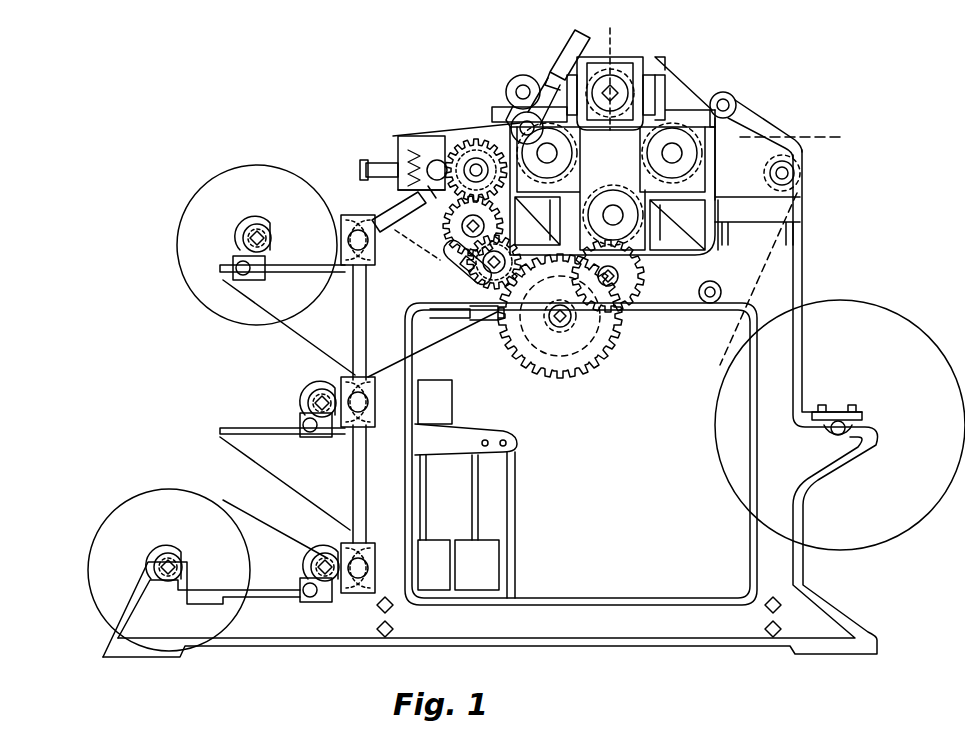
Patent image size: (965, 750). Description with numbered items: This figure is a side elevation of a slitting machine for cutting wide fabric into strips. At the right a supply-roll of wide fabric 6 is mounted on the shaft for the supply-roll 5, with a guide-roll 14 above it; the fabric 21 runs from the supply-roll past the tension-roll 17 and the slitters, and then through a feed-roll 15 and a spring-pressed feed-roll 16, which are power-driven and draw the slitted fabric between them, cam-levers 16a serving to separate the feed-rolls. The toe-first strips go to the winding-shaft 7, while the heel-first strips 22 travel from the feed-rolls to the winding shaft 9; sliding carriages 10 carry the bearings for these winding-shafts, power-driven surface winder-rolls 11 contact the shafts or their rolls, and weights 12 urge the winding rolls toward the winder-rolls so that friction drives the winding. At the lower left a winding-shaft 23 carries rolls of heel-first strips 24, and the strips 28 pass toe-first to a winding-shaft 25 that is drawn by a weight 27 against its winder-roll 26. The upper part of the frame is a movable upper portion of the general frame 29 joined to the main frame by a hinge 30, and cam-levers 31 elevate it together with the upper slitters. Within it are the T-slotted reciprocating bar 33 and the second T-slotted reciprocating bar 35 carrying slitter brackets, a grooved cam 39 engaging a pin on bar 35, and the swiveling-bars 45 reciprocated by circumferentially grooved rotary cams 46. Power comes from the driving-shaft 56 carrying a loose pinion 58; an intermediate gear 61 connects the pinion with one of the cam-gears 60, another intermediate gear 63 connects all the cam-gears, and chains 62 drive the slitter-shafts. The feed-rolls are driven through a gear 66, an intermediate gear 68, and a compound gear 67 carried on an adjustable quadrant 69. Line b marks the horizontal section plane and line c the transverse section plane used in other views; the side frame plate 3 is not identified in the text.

The side frame plate 3 is at (783, 309).
The shaft for the supply-roll 5 is at (840, 420).
The supply-roll of wide fabric 6 is at (920, 352).
The winding-shaft 7 is at (274, 240).
The winding shaft 9 is at (213, 188).
The sliding carriages 10 is at (262, 278).
The surface winder-rolls 11 is at (345, 215).
The weights 12 is at (428, 545).
The guide-roll 14 is at (802, 177).
The feed-roll 15 is at (474, 140).
The spring-pressed feed-roll 16 is at (420, 148).
The cam-levers 16a is at (392, 212).
The tension-roll 17 is at (450, 418).
The fabric 21 is at (440, 252).
The heel-first strips 22 is at (458, 343).
The winding-shaft 23 is at (176, 558).
The rolls of heel-first strips 24 is at (158, 500).
The winding-shaft 25 is at (306, 564).
The winder-roll 26 is at (376, 562).
The weight 27 is at (492, 575).
The strips 28 is at (262, 536).
The movable upper portion of the general frame 29 is at (684, 115).
The hinge 30 is at (738, 105).
The cam-levers 31 is at (514, 108).
The bar 33 is at (648, 88).
The second T-slotted reciprocating bar 35 is at (560, 82).
The cam 39 is at (627, 63).
The swiveling-bars 45 is at (733, 97).
The circumferentially grooved rotary cams 46 is at (700, 178).
The driving-shaft 56 is at (560, 332).
The pinion 58 is at (552, 322).
The gear 60 is at (602, 196).
The intermediate gear 61 is at (648, 285).
The chains 62 is at (612, 345).
The intermediate gear 63 is at (700, 200).
The gear 66 is at (446, 152).
The compound gear 67 is at (490, 300).
The intermediate gear 68 is at (505, 246).
The adjustable quadrant 69 is at (410, 298).
The line b is at (800, 137).
The line c is at (606, 70).